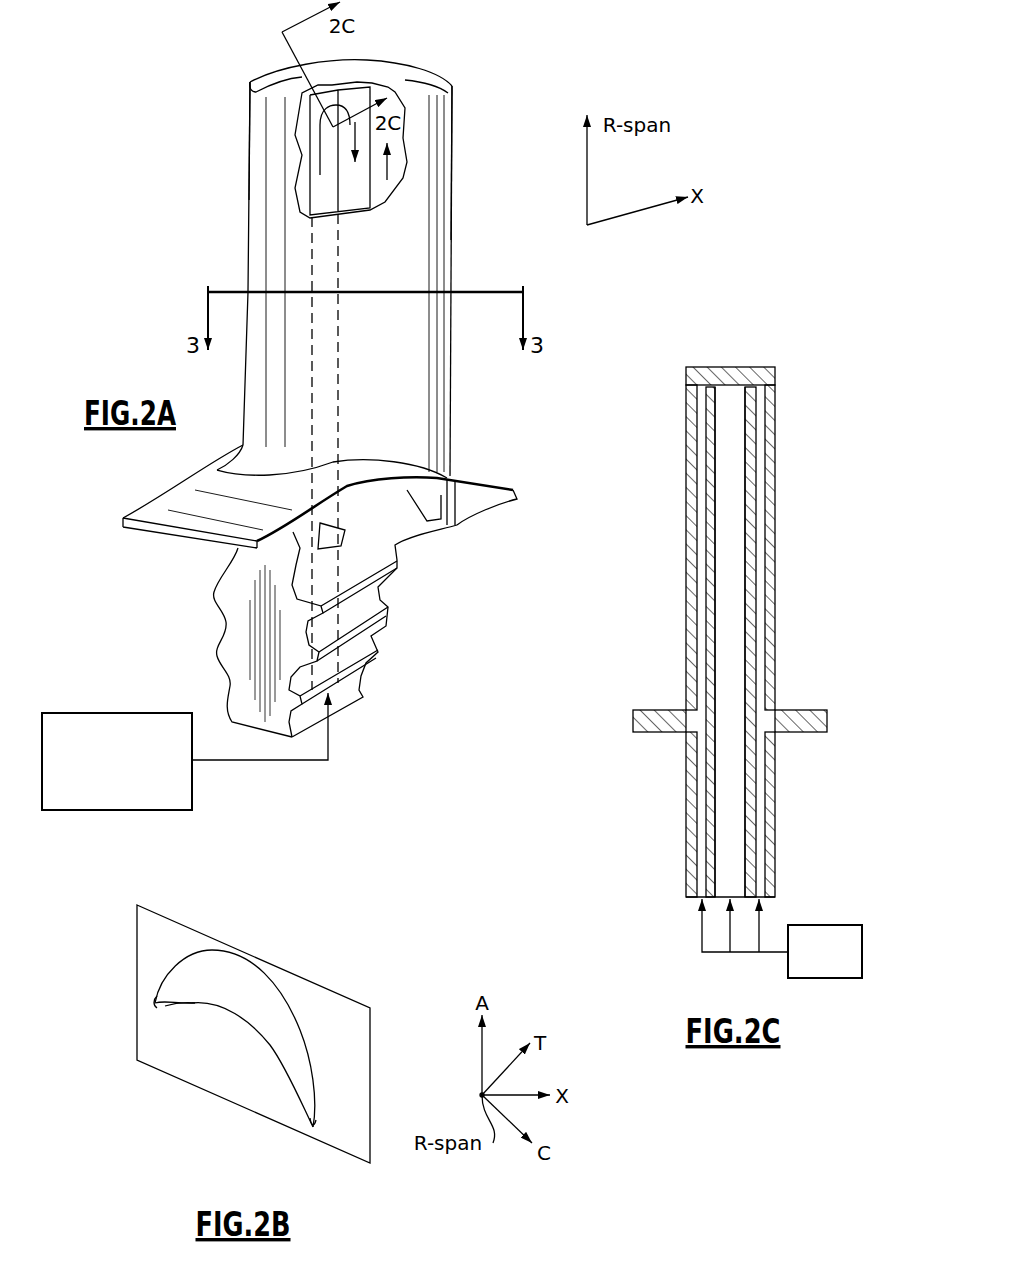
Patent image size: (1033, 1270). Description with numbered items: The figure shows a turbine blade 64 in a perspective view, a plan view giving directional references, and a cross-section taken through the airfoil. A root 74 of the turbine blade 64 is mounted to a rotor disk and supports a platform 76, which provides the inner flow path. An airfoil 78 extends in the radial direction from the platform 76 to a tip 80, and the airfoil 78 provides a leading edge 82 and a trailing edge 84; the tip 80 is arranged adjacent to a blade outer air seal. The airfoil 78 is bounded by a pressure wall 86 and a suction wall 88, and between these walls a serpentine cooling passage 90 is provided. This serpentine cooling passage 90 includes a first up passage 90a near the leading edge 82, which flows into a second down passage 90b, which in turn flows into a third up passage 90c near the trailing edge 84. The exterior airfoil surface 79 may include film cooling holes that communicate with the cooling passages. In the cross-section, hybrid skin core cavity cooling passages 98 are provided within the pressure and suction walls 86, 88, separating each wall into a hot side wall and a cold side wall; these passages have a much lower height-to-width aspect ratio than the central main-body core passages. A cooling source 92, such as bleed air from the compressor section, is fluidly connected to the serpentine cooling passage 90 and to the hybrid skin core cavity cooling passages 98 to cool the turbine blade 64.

In FIG. 2A, the turbine blade 64 is at (217, 230).
In FIG. 2B, the turbine blade 64 is at (342, 948).
In FIG. 2C, the turbine blade 64 is at (657, 588).
In FIG. 2A, the root 74 is at (253, 643).
In FIG. 2C, the root 74 is at (775, 822).
In FIG. 2A, the platform 76 is at (357, 473).
In FIG. 2B, the platform 76 is at (187, 922).
In FIG. 2C, the platform 76 is at (803, 710).
In FIG. 2A, the airfoil 78 is at (397, 360).
In FIG. 2B, the airfoil 78 is at (163, 1012).
In FIG. 2A, the exterior airfoil surface 79 is at (417, 398).
In FIG. 2C, the exterior airfoil surface 79 is at (777, 543).
In FIG. 2A, the tip 80 is at (258, 72).
In FIG. 2C, the tip 80 is at (725, 367).
In FIG. 2A, the leading edge 82 is at (248, 227).
In FIG. 2B, the leading edge 82 is at (155, 1007).
In FIG. 2A, the trailing edge 84 is at (452, 222).
In FIG. 2B, the trailing edge 84 is at (313, 1127).
In FIG. 2A, the pressure wall 86 is at (363, 265).
In FIG. 2B, the pressure wall 86 is at (245, 1017).
In FIG. 2A, the suction wall 88 is at (380, 58).
In FIG. 2B, the suction wall 88 is at (253, 965).
In FIG. 2A, the serpentine cooling passage 90 is at (410, 165).
In FIG. 2C, the serpentine cooling passage 90 is at (723, 628).
In FIG. 2A, the first passage 90a is at (322, 188).
In FIG. 2A, the second passage 90b is at (358, 197).
In FIG. 2A, the third passage 90c is at (402, 140).
In FIG. 2A, the cooling source 92 is at (112, 713).
In FIG. 2C, the cooling source 92 is at (782, 938).
In FIG. 2C, the hybrid skin core cavity cooling passages 98 is at (700, 413).